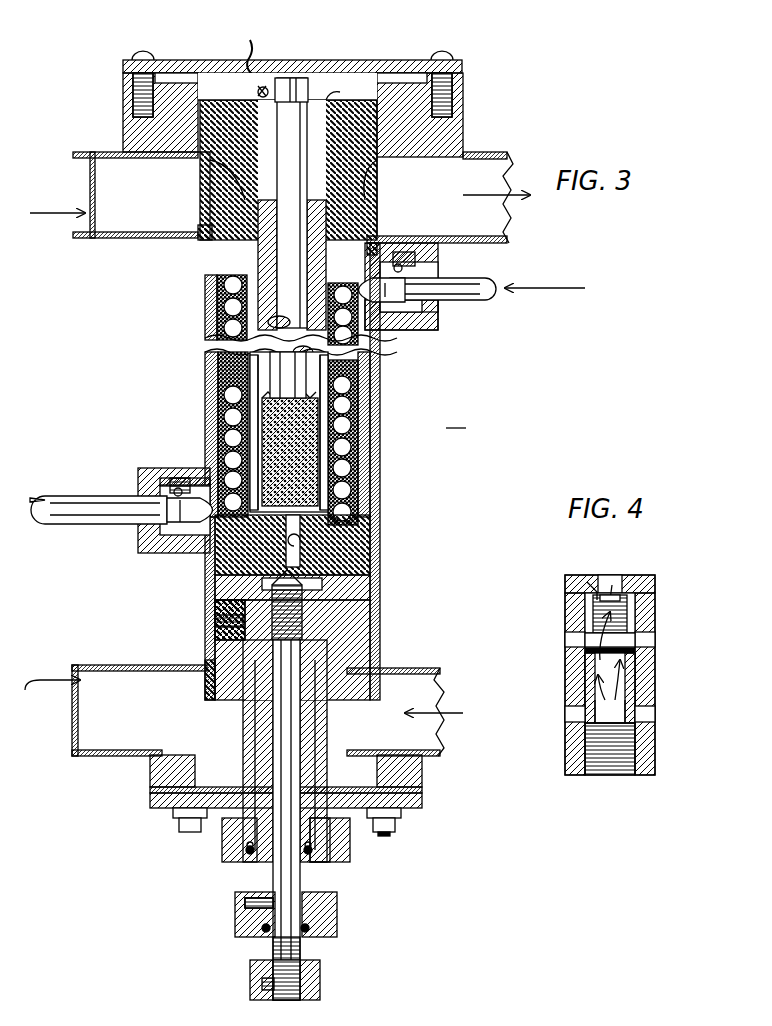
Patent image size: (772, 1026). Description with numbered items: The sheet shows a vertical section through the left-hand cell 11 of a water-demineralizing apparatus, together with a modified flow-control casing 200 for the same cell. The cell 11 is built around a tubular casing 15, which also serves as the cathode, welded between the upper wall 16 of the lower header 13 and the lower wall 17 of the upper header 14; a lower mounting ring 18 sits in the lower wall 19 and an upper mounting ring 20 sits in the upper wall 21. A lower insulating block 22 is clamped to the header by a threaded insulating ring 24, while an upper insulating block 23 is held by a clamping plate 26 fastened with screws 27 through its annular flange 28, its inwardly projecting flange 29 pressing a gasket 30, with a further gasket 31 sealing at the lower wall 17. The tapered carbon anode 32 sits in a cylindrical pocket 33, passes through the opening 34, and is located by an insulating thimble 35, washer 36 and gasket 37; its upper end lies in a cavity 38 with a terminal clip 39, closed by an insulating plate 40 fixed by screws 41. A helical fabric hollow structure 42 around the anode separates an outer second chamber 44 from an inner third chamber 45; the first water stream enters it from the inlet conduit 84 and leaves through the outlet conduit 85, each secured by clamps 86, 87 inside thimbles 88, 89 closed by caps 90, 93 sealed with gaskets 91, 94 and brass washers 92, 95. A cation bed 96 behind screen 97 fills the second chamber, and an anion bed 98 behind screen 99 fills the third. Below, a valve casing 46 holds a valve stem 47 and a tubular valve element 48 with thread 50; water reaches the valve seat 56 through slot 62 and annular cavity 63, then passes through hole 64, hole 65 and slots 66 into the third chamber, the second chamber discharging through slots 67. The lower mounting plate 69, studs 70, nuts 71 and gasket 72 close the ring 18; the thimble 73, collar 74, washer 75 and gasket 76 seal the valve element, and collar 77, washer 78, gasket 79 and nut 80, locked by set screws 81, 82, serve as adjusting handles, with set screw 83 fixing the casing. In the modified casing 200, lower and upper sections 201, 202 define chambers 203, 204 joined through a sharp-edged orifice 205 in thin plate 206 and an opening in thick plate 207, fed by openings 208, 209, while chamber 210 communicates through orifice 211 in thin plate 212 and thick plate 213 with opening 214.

In FIG. 3, the left-hand cell 11 is at (456, 419).
In FIG. 3, the lower header 13 is at (52, 676).
In FIG. 3, the upper header 14 is at (57, 213).
In FIG. 3, the tubular casing 15 is at (380, 470).
In FIG. 3, the upper wall of lower header 16 is at (100, 665).
In FIG. 3, the lower wall of upper header 17 is at (100, 240).
In FIG. 3, the lower mounting ring 18 is at (150, 770).
In FIG. 3, the lower wall of lower header 19 is at (80, 740).
In FIG. 3, the upper mounting ring 20 is at (123, 130).
In FIG. 3, the upper wall of upper header 21 is at (85, 180).
In FIG. 3, the lower insulating block 22 is at (370, 535).
In FIG. 3, the upper insulating block 23 is at (385, 165).
In FIG. 3, the threaded insulating ring 24 is at (205, 686).
In FIG. 3, the clamping plate 26 is at (352, 75).
In FIG. 3, the screws 27 is at (450, 66).
In FIG. 3, the annular flange 28 is at (462, 78).
In FIG. 3, the inwardly projecting annular flange 29 is at (250, 90).
In FIG. 3, the rubber gasket 30 is at (180, 150).
In FIG. 3, the rubber gasket 31 is at (372, 245).
In FIG. 3, the anode 32 is at (358, 378).
In FIG. 3, the cylindrical pocket 33 is at (327, 468).
In FIG. 3, the opening 34 is at (265, 243).
In FIG. 3, the insulating thimble 35 is at (335, 88).
In FIG. 3, the annular washer 36 is at (225, 195).
In FIG. 3, the rubber gasket 37 is at (258, 210).
In FIG. 3, the annular cavity 38 is at (250, 42).
In FIG. 3, the metal clip 39 is at (290, 78).
In FIG. 3, the annular insulating plate 40 is at (210, 70).
In FIG. 3, the screws 41 is at (148, 58).
In FIG. 3, the hollow structure 42 is at (220, 332).
In FIG. 3, the second chamber 44 is at (370, 408).
In FIG. 3, the third chamber 45 is at (380, 343).
In FIG. 3, the valve casing 46 is at (370, 650).
In FIG. 3, the valve stem 47 is at (295, 718).
In FIG. 3, the tubular valve element 48 is at (258, 712).
In FIG. 3, the thread 50 is at (252, 745).
In FIG. 3, the valve seat 56 is at (370, 574).
In FIG. 3, the slot 62 is at (330, 608).
In FIG. 3, the annular cavity 63 is at (215, 595).
In FIG. 3, the hole 64 is at (210, 576).
In FIG. 3, the hole 65 is at (305, 545).
In FIG. 3, the slots 66 is at (320, 430).
In FIG. 3, the slots 67 is at (210, 198).
In FIG. 3, the lower mounting plate 69 is at (422, 800).
In FIG. 3, the studs 70 is at (388, 836).
In FIG. 3, the nuts 71 is at (395, 815).
In FIG. 3, the rubber gasket 72 is at (422, 788).
In FIG. 3, the annular thimble 73 is at (350, 845).
In FIG. 3, the collar 74 is at (312, 855).
In FIG. 3, the annular washer 75 is at (230, 840).
In FIG. 3, the rubber gasket 76 is at (245, 855).
In FIG. 3, the collar 77 is at (330, 915).
In FIG. 3, the annular washer 78 is at (245, 915).
In FIG. 3, the rubber gasket 79 is at (310, 938).
In FIG. 3, the nut 80 is at (320, 985).
In FIG. 3, the set screw 81 is at (248, 902).
In FIG. 3, the set screw 82 is at (268, 990).
In FIG. 3, the set screw 83 is at (215, 622).
In FIG. 3, the inlet conduit 84 is at (478, 300).
In FIG. 3, the outlet conduit 85 is at (78, 495).
In FIG. 3, the clamp 86 is at (410, 290).
In FIG. 3, the clamp 87 is at (135, 520).
In FIG. 3, the thimble 88 is at (372, 330).
In FIG. 3, the thimble 89 is at (205, 468).
In FIG. 3, the cap 90 is at (435, 322).
In FIG. 3, the rubber gasket 91 is at (420, 265).
In FIG. 3, the brass washer 92 is at (425, 248).
In FIG. 3, the cap 93 is at (150, 475).
In FIG. 3, the rubber gasket 94 is at (165, 478).
In FIG. 3, the brass washer 95 is at (175, 478).
In FIG. 3, the first porous bed 96 is at (218, 290).
In FIG. 3, the foraminous screen 97 is at (215, 306).
In FIG. 3, the second porous bed 98 is at (220, 380).
In FIG. 3, the foraminous screen 99 is at (225, 355).
In FIG. 4, the casing 200 is at (563, 590).
In FIG. 4, the lower section 201 is at (655, 672).
In FIG. 4, the upper section 202 is at (650, 605).
In FIG. 4, the chamber 203 is at (600, 683).
In FIG. 4, the chamber 204 is at (630, 640).
In FIG. 4, the sharp-edged orifice 205 is at (588, 656).
In FIG. 4, the thin plate 206 is at (635, 695).
In FIG. 4, the thick plate 207 is at (635, 650).
In FIG. 4, the first series of openings 208 is at (585, 714).
In FIG. 4, the second series of openings 209 is at (565, 640).
In FIG. 4, the chamber 210 is at (650, 582).
In FIG. 4, the sharp-edged orifice 211 is at (605, 605).
In FIG. 4, the thin plate 212 is at (585, 580).
In FIG. 4, the thick plate 213 is at (622, 590).
In FIG. 4, the opening 214 is at (612, 580).